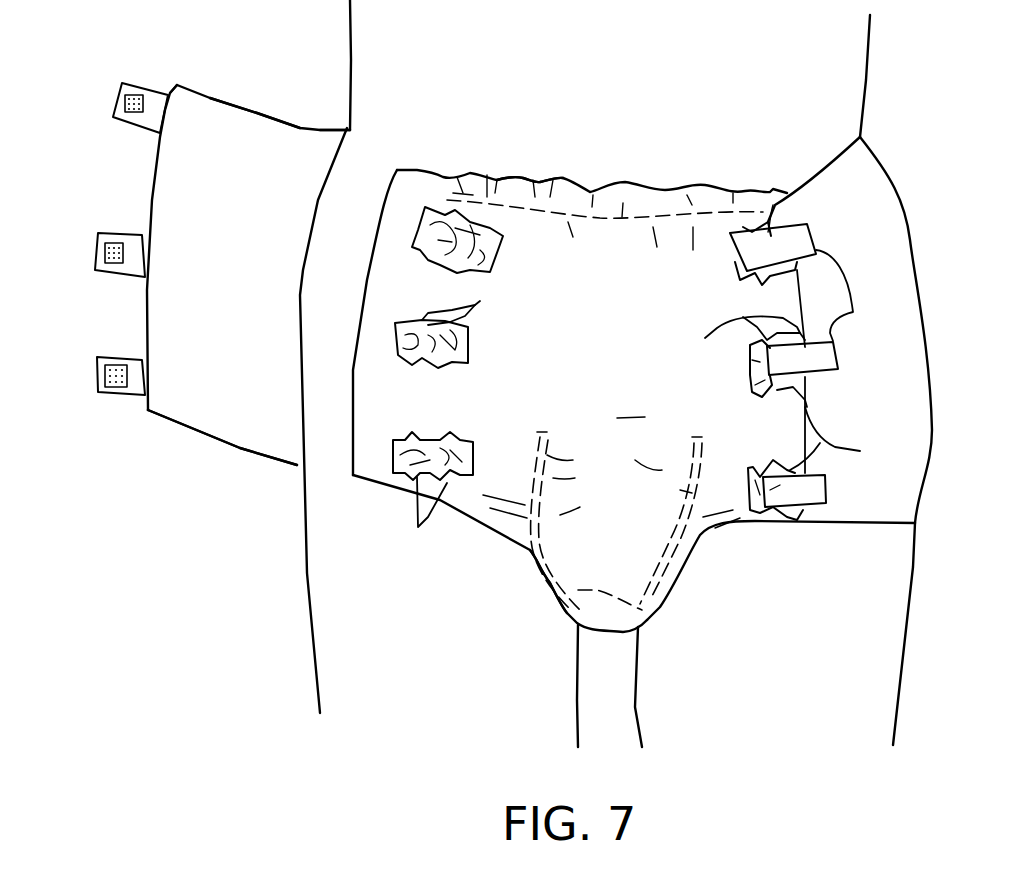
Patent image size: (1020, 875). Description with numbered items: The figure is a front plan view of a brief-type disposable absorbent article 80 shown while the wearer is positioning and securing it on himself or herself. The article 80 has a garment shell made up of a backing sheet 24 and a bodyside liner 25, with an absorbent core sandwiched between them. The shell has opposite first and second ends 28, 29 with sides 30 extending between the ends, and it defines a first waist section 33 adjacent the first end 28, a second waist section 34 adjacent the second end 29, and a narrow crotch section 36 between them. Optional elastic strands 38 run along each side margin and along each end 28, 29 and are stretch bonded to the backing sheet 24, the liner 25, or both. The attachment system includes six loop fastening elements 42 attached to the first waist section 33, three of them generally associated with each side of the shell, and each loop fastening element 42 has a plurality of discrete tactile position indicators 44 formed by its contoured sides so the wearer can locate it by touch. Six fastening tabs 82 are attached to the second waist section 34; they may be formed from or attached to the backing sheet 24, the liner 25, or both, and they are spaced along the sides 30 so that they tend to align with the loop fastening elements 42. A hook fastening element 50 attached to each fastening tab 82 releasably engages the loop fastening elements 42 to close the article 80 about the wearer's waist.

The backing sheet 24 is at (601, 381).
The bodyside liner 25 is at (241, 361).
The first end 28 is at (610, 180).
The second end 29 is at (320, 130).
The sides 30 is at (161, 92).
The first waist section 33 is at (542, 163).
The second waist section 34 is at (257, 96).
The crotch section 36 is at (520, 567).
The elastic strands 38 is at (488, 172).
The loop fastening element 42 is at (500, 247).
The tactile position indicator 44 is at (647, 416).
The hook fastening element 50 is at (115, 120).
The disposable absorbent article 80 is at (232, 470).
The fastening tab 82 is at (113, 97).